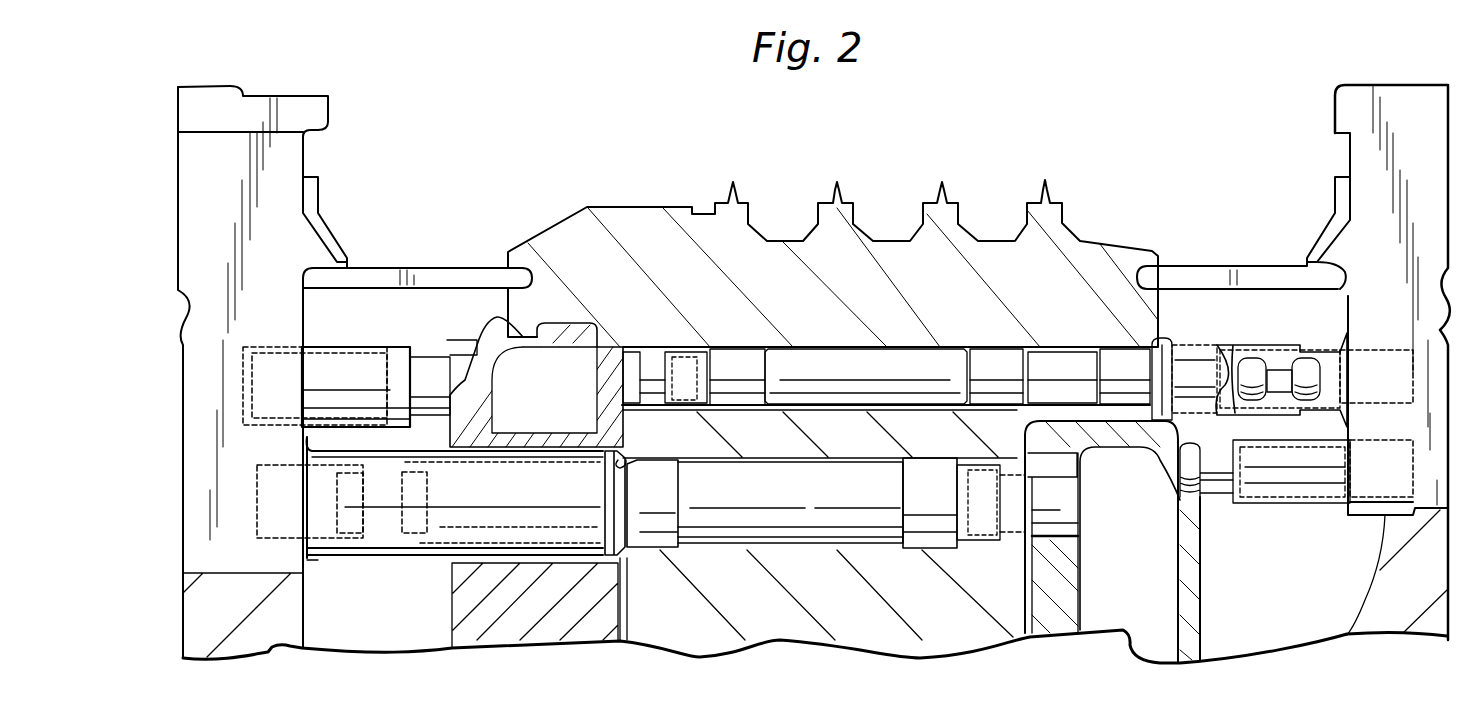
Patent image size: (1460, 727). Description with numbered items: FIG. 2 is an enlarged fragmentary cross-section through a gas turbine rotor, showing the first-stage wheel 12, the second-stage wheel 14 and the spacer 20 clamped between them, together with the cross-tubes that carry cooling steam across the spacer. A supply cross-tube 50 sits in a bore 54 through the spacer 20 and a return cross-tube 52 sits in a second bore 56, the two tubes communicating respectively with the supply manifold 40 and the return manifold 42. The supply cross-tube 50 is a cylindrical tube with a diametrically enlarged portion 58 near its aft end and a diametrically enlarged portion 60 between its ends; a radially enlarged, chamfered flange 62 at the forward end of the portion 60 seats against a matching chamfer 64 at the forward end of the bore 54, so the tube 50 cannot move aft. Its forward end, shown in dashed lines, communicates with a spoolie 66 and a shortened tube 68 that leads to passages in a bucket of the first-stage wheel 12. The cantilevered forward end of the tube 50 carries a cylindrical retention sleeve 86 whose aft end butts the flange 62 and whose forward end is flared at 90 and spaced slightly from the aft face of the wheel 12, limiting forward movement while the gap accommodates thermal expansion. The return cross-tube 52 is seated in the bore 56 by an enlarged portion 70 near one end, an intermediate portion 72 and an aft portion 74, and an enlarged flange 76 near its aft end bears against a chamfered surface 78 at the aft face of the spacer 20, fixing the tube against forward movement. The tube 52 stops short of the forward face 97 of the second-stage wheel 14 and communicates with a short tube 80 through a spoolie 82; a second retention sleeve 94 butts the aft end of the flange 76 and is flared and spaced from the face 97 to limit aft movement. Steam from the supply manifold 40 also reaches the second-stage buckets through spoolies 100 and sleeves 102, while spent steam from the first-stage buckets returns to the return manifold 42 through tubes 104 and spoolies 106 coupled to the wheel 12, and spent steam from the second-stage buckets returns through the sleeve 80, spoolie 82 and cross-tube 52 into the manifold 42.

The first-stage wheel 12 is at (280, 177).
The second-stage wheel 14 is at (1363, 158).
The spacer 20 is at (633, 220).
The supply manifold 40 is at (1127, 620).
The return manifold 42 is at (527, 620).
The supply cross-tube 50 is at (762, 502).
The return cross-tube 52 is at (877, 377).
The bore 54 is at (720, 533).
The bore 56 is at (920, 412).
The diametrically enlarged portion 58 is at (919, 502).
The diametrically enlarged portion 60 is at (640, 502).
The radially enlarged flange 62 is at (627, 550).
The chamfer 64 is at (627, 462).
The spoolie 66 is at (380, 535).
The shortened tube 68 is at (257, 540).
The diametrically enlarged portion 70 is at (749, 377).
The intermediate portion 72 is at (1005, 377).
The aft portion 74 is at (1134, 379).
The enlarged diameter flange 76 is at (1187, 362).
The chamfered surface 78 is at (1163, 343).
The short tube 80 is at (1288, 340).
The spoolie 82 is at (1280, 395).
The retention sleeve 86 is at (418, 556).
The flared end 90 is at (312, 560).
The retention sleeve 94 is at (1250, 420).
The forward face 97 is at (1352, 310).
The spoolies 100 is at (1220, 500).
The sleeves 102 is at (1336, 505).
The tubes 104 is at (363, 345).
The spoolies 106 is at (422, 370).